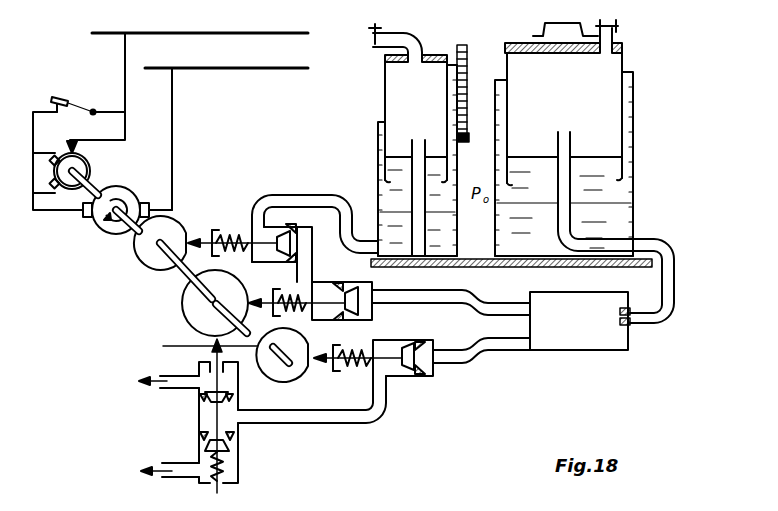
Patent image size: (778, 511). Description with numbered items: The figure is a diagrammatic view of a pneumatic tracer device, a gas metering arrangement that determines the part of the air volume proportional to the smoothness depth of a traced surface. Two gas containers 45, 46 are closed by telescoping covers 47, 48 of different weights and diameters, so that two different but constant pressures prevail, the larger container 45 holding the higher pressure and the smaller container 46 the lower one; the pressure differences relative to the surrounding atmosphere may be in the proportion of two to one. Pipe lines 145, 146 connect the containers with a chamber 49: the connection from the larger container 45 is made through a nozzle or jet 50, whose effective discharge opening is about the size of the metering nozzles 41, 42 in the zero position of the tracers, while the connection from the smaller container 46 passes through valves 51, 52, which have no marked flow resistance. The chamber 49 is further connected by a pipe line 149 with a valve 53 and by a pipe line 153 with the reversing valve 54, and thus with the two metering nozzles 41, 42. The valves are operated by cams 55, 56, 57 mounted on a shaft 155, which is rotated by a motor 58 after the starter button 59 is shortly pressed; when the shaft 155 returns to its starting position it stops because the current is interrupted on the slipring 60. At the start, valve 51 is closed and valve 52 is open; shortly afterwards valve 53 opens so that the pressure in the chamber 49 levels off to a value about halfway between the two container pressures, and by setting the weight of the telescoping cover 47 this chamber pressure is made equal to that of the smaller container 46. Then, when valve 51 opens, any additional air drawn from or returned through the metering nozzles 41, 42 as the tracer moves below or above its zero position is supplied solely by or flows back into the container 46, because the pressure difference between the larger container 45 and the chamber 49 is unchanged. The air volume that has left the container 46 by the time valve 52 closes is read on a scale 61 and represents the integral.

The starter button 59 is at (59, 97).
The slipring 60 is at (92, 160).
The motor 58 is at (138, 191).
The cam 55 is at (146, 258).
The shaft 155 is at (186, 278).
The cam 56 is at (183, 311).
The cam 57 is at (200, 416).
The reversing valve 54 is at (199, 416).
The metering nozzle 41 is at (133, 381).
The metering nozzle 42 is at (136, 469).
The pipe line 153 is at (306, 420).
The valve 51 is at (278, 233).
The pipe line 146 is at (328, 184).
The valve 52 is at (354, 316).
The valve 53 is at (440, 366).
The pipe line 149 is at (506, 351).
The chamber 49 is at (562, 341).
The nozzle or jet 50 is at (622, 328).
The pipe line 145 is at (675, 246).
The gas container 46 is at (400, 178).
The telescoping cover 48 is at (385, 92).
The scale 61 is at (462, 62).
The gas container 45 is at (610, 168).
The telescoping cover 47 is at (624, 82).